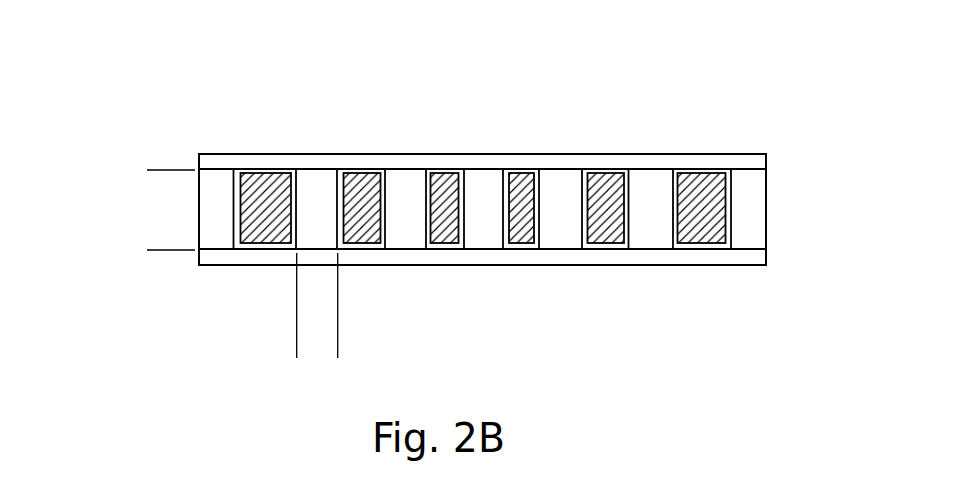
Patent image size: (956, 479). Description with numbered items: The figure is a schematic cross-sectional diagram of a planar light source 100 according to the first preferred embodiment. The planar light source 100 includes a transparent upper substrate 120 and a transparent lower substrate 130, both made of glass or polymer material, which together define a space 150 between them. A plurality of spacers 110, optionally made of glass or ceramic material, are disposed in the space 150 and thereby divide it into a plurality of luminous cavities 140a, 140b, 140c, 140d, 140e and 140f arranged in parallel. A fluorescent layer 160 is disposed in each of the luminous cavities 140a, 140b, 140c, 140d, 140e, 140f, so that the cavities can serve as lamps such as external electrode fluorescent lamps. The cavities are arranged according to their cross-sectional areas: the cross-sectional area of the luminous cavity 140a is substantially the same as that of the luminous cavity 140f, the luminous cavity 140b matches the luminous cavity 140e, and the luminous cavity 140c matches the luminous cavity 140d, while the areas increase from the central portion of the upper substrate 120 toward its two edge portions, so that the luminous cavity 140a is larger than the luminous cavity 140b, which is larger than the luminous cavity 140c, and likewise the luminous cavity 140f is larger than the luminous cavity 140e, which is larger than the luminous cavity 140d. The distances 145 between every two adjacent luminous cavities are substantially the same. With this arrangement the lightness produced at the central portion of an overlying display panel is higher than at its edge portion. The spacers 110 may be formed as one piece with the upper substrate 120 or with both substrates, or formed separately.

The planar light source 100 is at (155, 55).
The spacers 110 is at (213, 185).
The upper substrate 120 is at (752, 160).
The lower substrate 130 is at (755, 253).
The luminous cavity 140a is at (700, 243).
The luminous cavity 140b is at (605, 243).
The luminous cavity 140c is at (520, 243).
The luminous cavity 140d is at (447, 243).
The luminous cavity 140e is at (371, 243).
The luminous cavity 140f is at (253, 243).
The distances between adjacent luminous cavities 145 is at (347, 352).
The space 150 is at (164, 120).
The fluorescent layer 160 is at (265, 173).